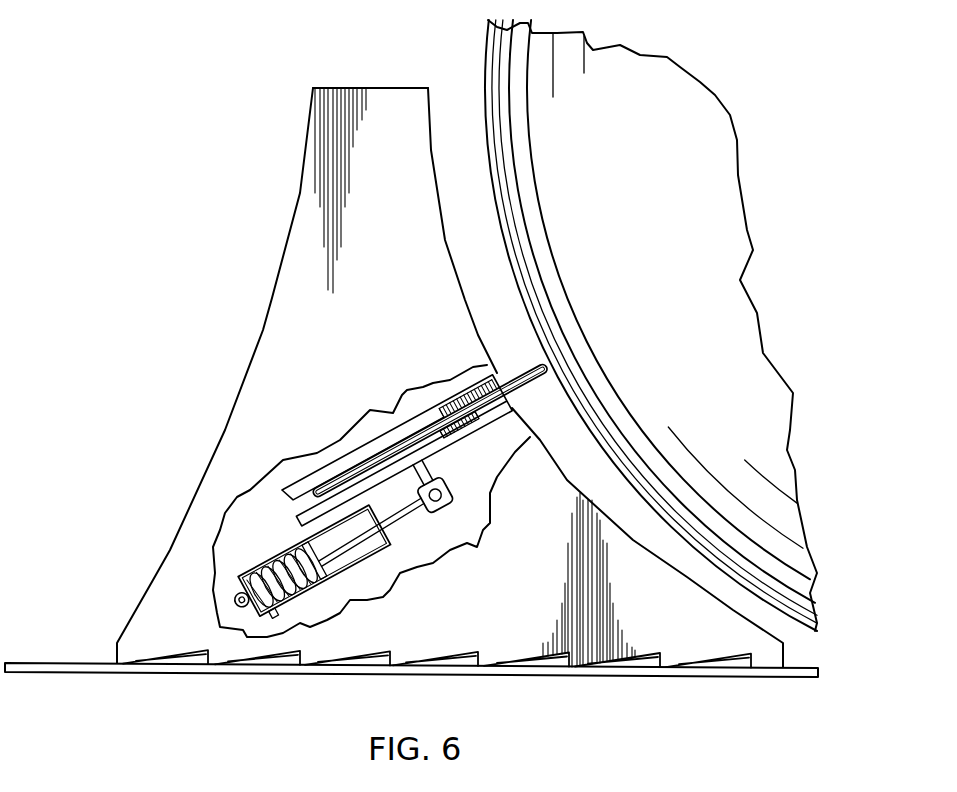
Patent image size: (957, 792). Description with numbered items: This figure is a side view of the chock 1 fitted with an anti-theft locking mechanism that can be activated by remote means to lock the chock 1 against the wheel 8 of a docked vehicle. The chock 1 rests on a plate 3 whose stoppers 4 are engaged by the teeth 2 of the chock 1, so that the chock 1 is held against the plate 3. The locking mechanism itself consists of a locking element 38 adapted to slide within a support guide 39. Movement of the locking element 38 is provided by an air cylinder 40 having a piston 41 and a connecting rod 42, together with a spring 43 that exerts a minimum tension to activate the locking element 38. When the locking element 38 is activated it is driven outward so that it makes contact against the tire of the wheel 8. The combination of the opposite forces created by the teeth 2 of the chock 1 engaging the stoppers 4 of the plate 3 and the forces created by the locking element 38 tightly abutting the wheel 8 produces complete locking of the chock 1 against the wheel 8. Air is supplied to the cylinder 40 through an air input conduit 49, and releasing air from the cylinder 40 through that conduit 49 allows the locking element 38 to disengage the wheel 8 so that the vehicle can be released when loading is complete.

The chock 1 is at (312, 218).
The teeth 2 is at (163, 657).
The plate 3 is at (80, 673).
The stoppers 4 is at (560, 670).
The wheel 8 is at (568, 78).
The locking element 38 is at (525, 370).
The support guide 39 is at (440, 384).
The air cylinder 40 is at (283, 552).
The piston 41 is at (347, 560).
The connecting rod 42 is at (420, 560).
The spring 43 is at (250, 565).
The air input conduit 49 is at (285, 625).